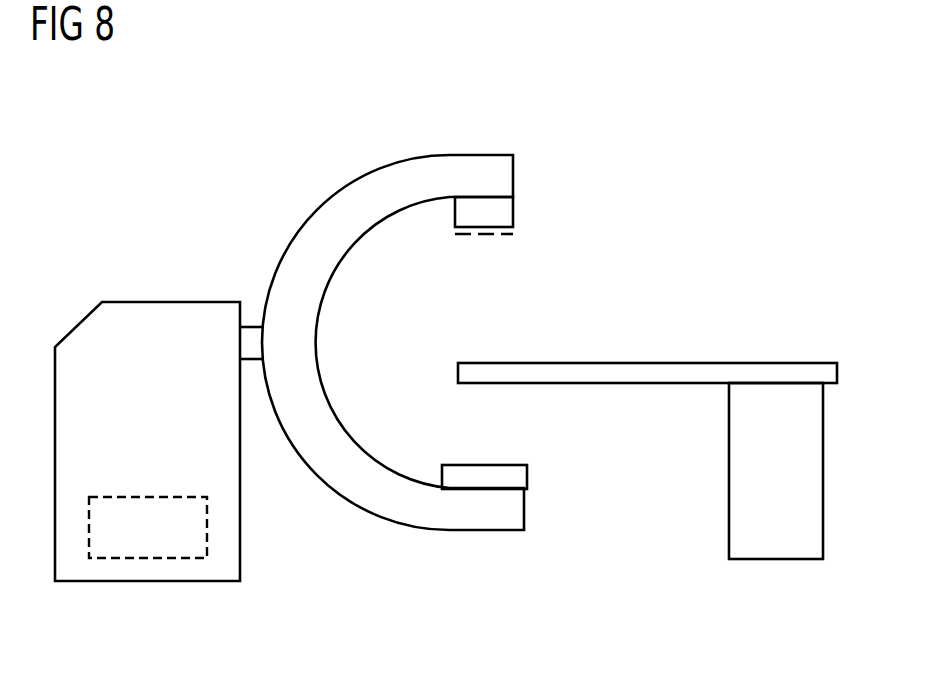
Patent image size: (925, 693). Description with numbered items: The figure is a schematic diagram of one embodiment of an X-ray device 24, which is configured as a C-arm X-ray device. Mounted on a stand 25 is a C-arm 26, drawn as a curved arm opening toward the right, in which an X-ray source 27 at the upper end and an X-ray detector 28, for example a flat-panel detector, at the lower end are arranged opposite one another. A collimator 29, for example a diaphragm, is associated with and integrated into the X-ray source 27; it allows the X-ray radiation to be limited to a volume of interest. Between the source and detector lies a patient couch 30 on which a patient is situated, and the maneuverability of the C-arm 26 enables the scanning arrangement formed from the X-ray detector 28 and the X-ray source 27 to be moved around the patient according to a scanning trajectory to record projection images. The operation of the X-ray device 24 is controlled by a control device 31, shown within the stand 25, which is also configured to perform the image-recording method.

The X-ray device 24 is at (205, 173).
The stand 25 is at (128, 300).
The C-arm 26 is at (371, 188).
The X-ray source 27 is at (500, 211).
The X-ray detector 28 is at (518, 479).
The collimator 29 is at (528, 234).
The patient couch 30 is at (687, 373).
The control device 31 is at (207, 527).